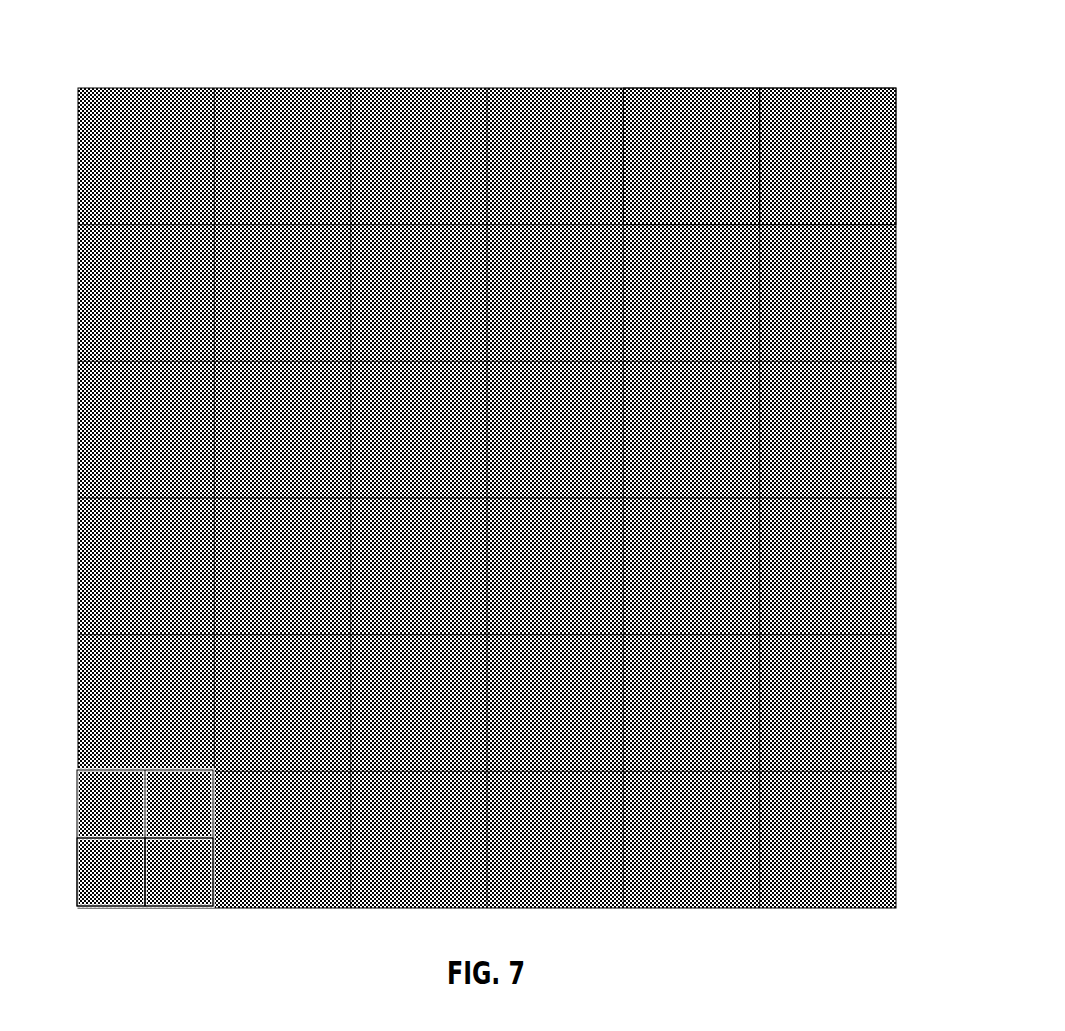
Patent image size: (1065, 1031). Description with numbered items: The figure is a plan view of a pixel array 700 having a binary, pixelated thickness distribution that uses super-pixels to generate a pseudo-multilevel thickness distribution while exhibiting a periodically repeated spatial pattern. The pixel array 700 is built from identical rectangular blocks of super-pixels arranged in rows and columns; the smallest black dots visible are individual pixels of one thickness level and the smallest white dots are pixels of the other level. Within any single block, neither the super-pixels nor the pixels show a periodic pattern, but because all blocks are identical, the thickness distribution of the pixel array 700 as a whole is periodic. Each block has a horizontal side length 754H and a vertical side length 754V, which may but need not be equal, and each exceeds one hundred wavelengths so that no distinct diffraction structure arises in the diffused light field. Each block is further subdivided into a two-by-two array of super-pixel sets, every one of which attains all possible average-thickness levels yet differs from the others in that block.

The pixel array 700 is at (100, 62).
The horizontal side length 754H is at (896, 70).
The vertical side length 754V is at (918, 88).